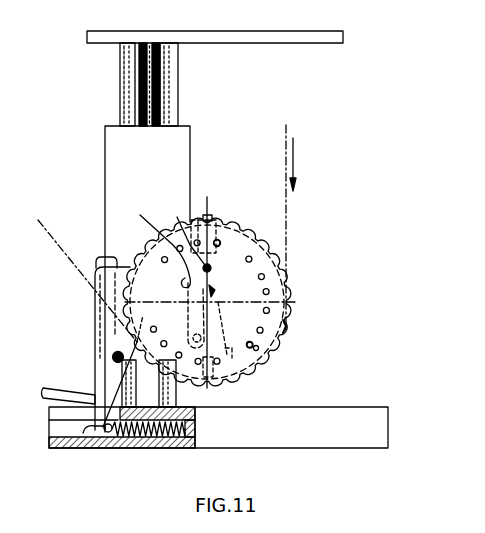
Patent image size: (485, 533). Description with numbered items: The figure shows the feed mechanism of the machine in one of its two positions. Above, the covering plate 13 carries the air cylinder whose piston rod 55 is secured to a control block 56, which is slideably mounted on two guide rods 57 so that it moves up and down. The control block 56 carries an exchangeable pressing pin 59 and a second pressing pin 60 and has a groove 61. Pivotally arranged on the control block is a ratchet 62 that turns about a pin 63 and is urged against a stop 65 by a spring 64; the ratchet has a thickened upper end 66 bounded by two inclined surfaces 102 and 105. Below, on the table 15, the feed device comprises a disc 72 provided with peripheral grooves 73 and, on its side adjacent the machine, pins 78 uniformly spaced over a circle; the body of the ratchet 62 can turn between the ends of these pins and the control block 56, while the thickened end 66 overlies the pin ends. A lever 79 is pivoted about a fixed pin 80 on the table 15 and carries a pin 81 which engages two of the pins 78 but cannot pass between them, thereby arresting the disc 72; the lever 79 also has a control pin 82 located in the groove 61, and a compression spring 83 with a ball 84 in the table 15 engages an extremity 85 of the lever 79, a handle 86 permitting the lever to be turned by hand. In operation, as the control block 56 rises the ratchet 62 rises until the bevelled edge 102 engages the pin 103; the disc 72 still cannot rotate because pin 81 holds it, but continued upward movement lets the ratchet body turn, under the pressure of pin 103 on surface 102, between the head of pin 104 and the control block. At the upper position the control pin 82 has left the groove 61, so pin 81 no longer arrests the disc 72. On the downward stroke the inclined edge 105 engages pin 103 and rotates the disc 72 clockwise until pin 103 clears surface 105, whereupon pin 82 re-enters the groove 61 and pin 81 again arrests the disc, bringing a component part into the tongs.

The covering plate 13 is at (305, 37).
The piston rod 55 is at (150, 43).
The guide rods 57 is at (125, 80).
The control block 56 is at (183, 135).
The table 15 is at (357, 419).
The compression spring 83 is at (146, 435).
The ball 84 is at (109, 433).
The extremity of the lever 85 is at (85, 440).
The handle 86 is at (60, 391).
The lever 79 is at (102, 305).
The control pin 82 is at (99, 279).
The groove 61 is at (103, 260).
The pin 81 is at (138, 265).
The fixed pin 80 is at (113, 355).
The second pressing pin 60 is at (214, 372).
The exchangeable pressing pin 59 is at (207, 217).
The pin 103 is at (198, 217).
The pin 104 is at (219, 242).
The stop 65 is at (156, 242).
The inclined surface 102 is at (179, 233).
The thickened upper end 66 is at (210, 267).
The inclined surface 105 is at (212, 276).
The ratchet 62 is at (213, 292).
The spring 64 is at (227, 310).
The pin 63 is at (201, 336).
The peripheral grooves 73 is at (282, 338).
The disc 72 is at (258, 348).
The pins 78 is at (252, 348).